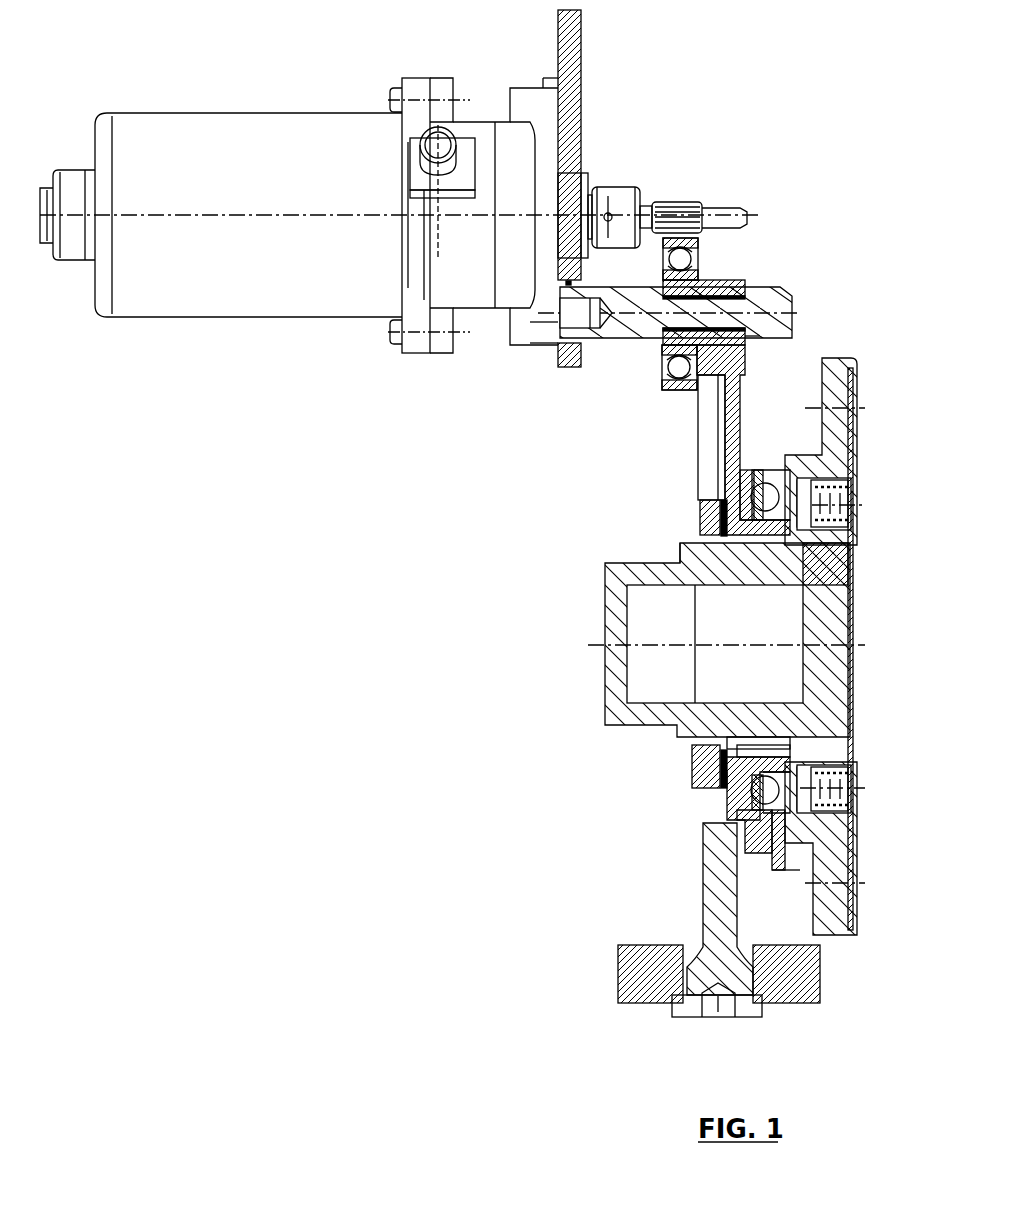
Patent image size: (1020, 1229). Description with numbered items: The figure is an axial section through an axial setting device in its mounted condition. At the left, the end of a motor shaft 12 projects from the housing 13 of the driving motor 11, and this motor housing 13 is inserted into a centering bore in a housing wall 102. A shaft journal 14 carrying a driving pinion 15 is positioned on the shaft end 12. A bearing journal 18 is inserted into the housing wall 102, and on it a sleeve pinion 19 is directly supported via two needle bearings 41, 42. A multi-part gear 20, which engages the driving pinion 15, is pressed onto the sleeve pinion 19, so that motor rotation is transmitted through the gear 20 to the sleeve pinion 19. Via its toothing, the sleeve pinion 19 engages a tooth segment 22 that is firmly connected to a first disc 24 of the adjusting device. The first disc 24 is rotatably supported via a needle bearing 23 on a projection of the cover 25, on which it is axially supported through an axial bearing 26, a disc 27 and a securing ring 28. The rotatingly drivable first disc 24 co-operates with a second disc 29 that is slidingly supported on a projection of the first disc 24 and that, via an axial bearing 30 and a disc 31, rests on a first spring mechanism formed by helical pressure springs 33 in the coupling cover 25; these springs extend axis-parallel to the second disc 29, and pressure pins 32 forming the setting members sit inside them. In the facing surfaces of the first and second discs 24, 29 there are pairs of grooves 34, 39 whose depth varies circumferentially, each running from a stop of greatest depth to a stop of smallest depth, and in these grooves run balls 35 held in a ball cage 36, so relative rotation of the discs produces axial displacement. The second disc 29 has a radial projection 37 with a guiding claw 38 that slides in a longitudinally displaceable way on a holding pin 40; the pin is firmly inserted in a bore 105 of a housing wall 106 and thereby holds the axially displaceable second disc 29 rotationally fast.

The driving motor 11 is at (288, 90).
The housing wall 102 is at (576, 57).
The housing 13 is at (567, 183).
The motor shaft 12 is at (595, 195).
The driving pinion 15 is at (682, 201).
The shaft journal 14 is at (722, 210).
The multi-part gear 20 is at (705, 252).
The sleeve pinion 19 is at (742, 278).
The bearing journal 18 is at (778, 298).
The needle bearing 41 is at (742, 348).
The needle bearing 42 is at (748, 342).
The tooth segment 22 is at (738, 380).
The first disc 24 is at (743, 478).
The ball cage 36 is at (753, 470).
The balls 35 is at (770, 484).
The second disc 29 is at (797, 478).
The cover 25 is at (833, 378).
The pressure pins 32 is at (838, 583).
The pressure springs 33 is at (812, 583).
The needle bearing 23 is at (748, 583).
The axial bearing 26 is at (722, 583).
The axial bearing 30 is at (774, 583).
The disc 31 is at (795, 583).
The securing ring 28 is at (672, 583).
The disc 27 is at (692, 583).
The groove 34 is at (748, 760).
The groove 39 is at (765, 745).
The guiding claw 38 is at (746, 842).
The radial projection 37 is at (765, 838).
The holding pin 40 is at (708, 898).
The housing wall 106 is at (636, 960).
The bore 105 is at (689, 963).